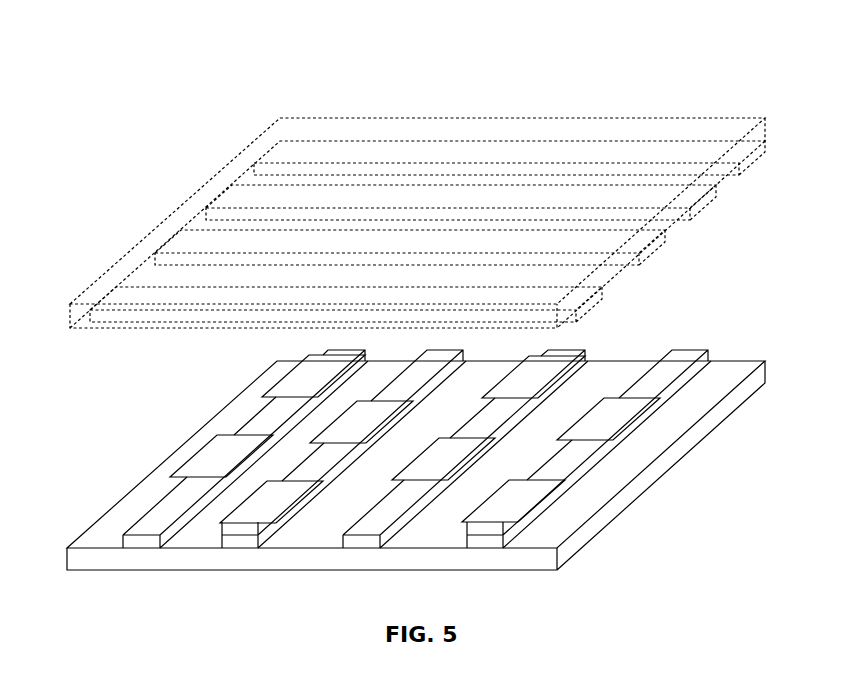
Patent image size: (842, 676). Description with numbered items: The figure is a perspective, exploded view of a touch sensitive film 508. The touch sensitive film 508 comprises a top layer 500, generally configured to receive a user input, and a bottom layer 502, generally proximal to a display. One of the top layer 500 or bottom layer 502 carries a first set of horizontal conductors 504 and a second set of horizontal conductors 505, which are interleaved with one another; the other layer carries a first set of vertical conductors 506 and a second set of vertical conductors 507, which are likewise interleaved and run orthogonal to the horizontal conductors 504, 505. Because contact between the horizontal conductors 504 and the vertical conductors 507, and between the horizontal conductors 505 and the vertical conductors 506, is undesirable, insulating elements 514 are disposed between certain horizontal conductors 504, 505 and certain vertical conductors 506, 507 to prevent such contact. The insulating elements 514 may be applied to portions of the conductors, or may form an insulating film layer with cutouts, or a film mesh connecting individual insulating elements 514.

The touch sensitive film 508 is at (74, 102).
The top layer 500 is at (72, 305).
The first set of horizontal conductors 504 is at (767, 151).
The second set of horizontal conductors 505 is at (707, 198).
The bottom layer 502 is at (74, 560).
The first set of vertical conductors 506 is at (708, 356).
The second set of vertical conductors 507 is at (390, 535).
The insulating elements 514 is at (207, 456).